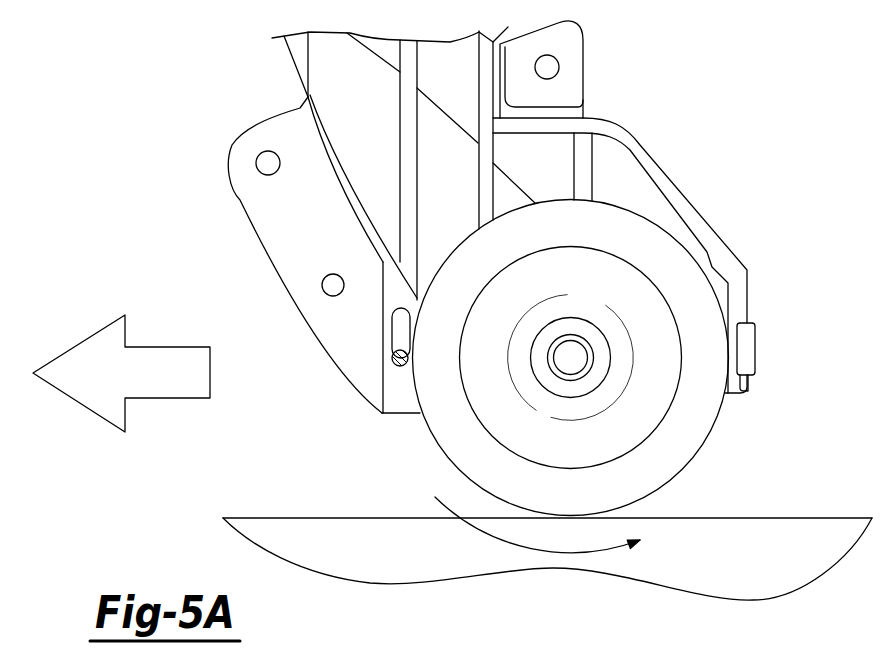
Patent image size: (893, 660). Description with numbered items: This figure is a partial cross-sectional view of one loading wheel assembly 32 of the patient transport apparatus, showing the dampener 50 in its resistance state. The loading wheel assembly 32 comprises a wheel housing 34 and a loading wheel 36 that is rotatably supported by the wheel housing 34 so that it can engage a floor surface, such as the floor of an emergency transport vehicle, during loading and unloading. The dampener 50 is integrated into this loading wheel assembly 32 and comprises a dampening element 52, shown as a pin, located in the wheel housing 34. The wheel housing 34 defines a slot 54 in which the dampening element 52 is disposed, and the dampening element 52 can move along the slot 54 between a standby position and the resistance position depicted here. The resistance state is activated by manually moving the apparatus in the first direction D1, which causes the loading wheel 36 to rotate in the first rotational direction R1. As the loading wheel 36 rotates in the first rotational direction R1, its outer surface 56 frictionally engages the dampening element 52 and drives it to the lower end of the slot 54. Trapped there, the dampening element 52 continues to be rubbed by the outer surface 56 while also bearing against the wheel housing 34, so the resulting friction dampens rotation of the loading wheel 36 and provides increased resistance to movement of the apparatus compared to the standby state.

The loading wheel assembly 32 is at (250, 82).
The wheel housing 34 is at (668, 130).
The loading wheel 36 is at (714, 431).
The dampener 50 is at (392, 372).
The dampening element 52 is at (390, 360).
The slot 54 is at (392, 325).
The outer surface 56 is at (688, 465).
The first direction D1 is at (165, 347).
The first rotational direction R1 is at (553, 525).